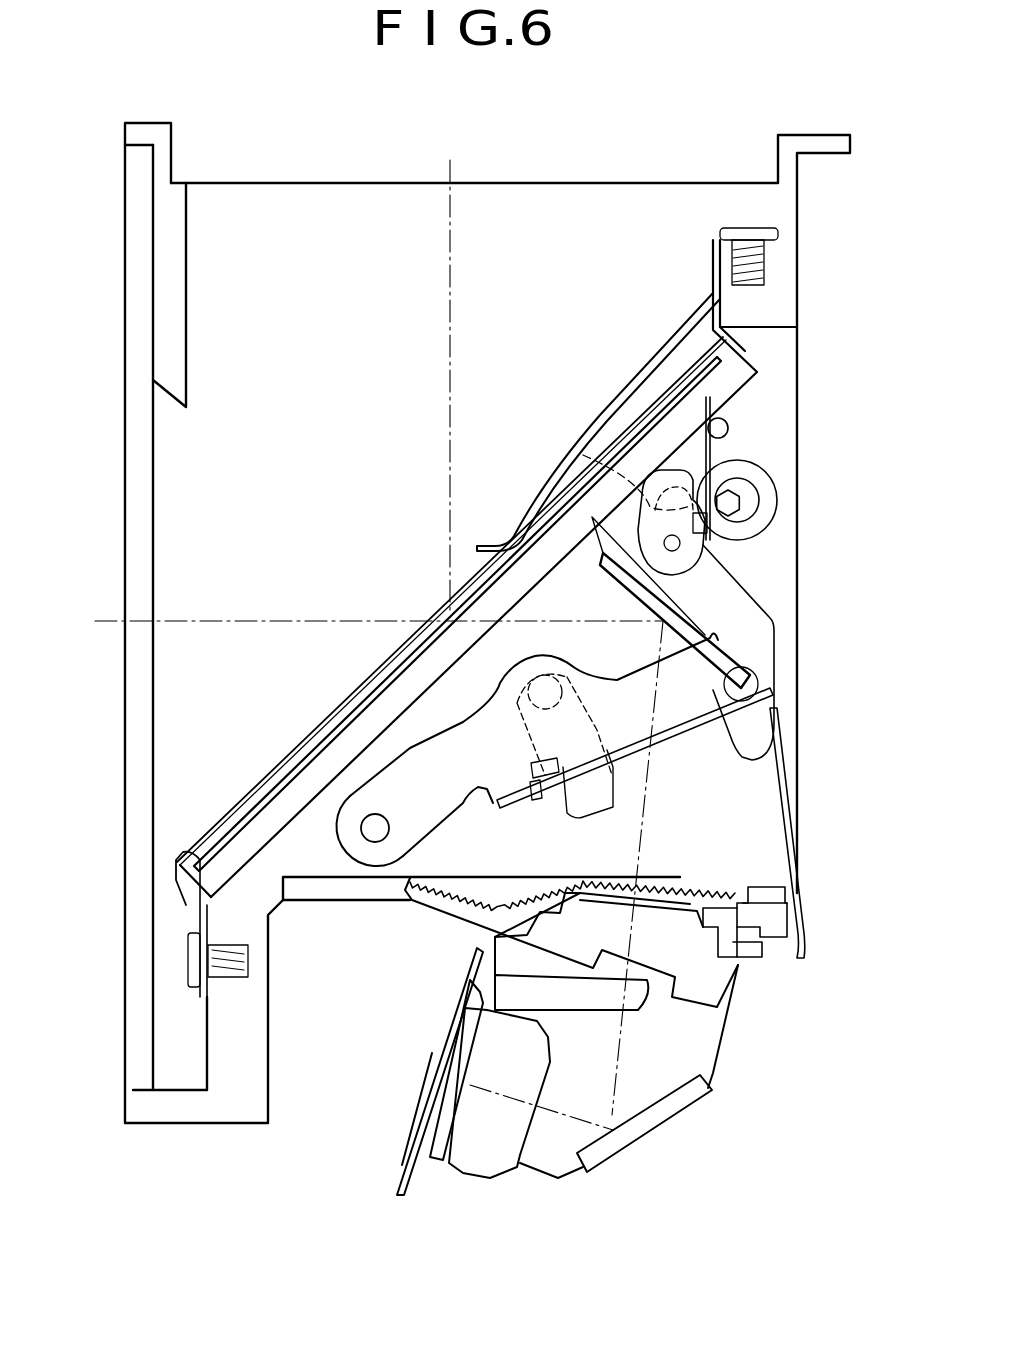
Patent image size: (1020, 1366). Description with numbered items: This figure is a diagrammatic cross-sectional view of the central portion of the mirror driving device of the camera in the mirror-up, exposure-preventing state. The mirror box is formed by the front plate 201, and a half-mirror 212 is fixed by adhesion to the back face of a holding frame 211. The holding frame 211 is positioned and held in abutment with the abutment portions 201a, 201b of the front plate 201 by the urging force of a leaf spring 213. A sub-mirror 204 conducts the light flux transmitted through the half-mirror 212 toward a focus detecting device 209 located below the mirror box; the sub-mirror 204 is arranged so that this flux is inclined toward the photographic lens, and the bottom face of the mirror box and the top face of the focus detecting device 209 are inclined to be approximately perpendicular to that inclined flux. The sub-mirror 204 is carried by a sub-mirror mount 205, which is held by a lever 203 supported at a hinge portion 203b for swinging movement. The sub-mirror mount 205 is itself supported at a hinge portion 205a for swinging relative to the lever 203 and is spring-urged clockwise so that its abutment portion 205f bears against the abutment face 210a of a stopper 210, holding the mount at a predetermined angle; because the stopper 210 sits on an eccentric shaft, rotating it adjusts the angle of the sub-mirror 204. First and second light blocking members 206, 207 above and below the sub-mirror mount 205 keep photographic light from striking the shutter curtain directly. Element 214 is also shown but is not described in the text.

The front plate 201 is at (180, 1123).
The abutment portion 201a is at (217, 907).
The abutment portion 201b is at (710, 423).
The lever 203 is at (463, 805).
The hinge portion 203b is at (375, 845).
The sub-mirror 204 is at (633, 587).
The sub-mirror mount 205 is at (760, 600).
The hinge portion 205a is at (775, 700).
The abutment portion 205f is at (583, 455).
The first light blocking member 206 is at (730, 443).
The second light blocking member 207 is at (795, 778).
The focus detecting device 209 is at (562, 1167).
The stopper 210 is at (777, 513).
The abutment face 210a is at (750, 493).
The holding frame 211 is at (237, 810).
The half-mirror 212 is at (300, 773).
The leaf spring 213 is at (627, 393).
The hook 214 is at (185, 905).